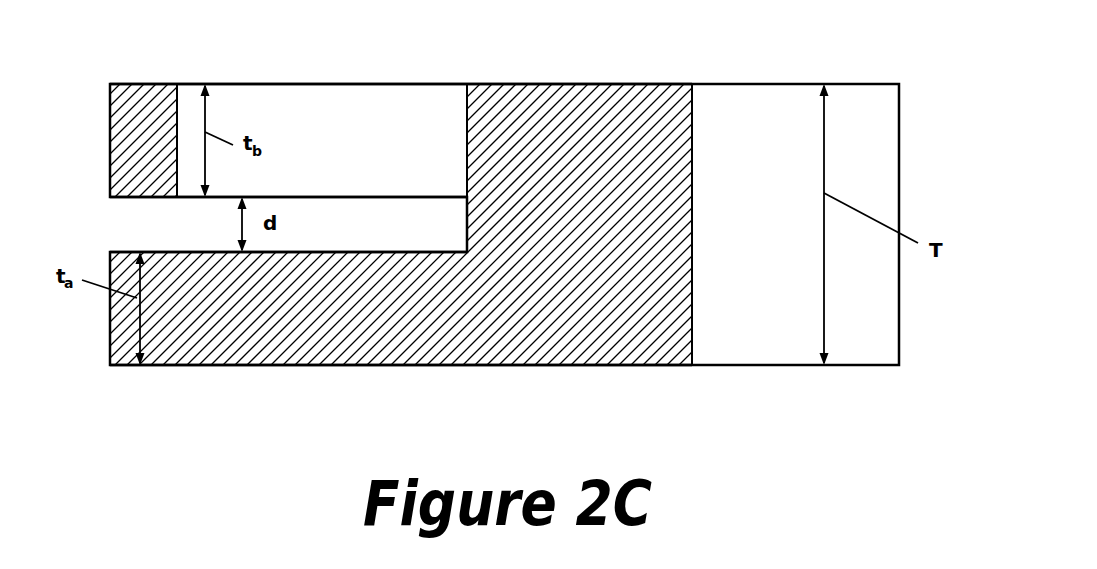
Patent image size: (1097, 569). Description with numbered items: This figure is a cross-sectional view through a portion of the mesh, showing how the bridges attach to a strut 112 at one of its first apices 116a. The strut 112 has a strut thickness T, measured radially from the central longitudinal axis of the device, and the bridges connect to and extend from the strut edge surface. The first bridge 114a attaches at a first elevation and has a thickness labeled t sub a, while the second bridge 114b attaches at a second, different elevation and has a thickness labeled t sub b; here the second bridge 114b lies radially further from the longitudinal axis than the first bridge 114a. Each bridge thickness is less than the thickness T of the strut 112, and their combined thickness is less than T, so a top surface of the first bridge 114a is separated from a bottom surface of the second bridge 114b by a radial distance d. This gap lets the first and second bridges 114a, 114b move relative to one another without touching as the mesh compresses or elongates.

The strut 112 is at (768, 365).
The first bridge 114a is at (278, 364).
The second bridge 114b is at (270, 85).
The first apex 116a is at (535, 85).